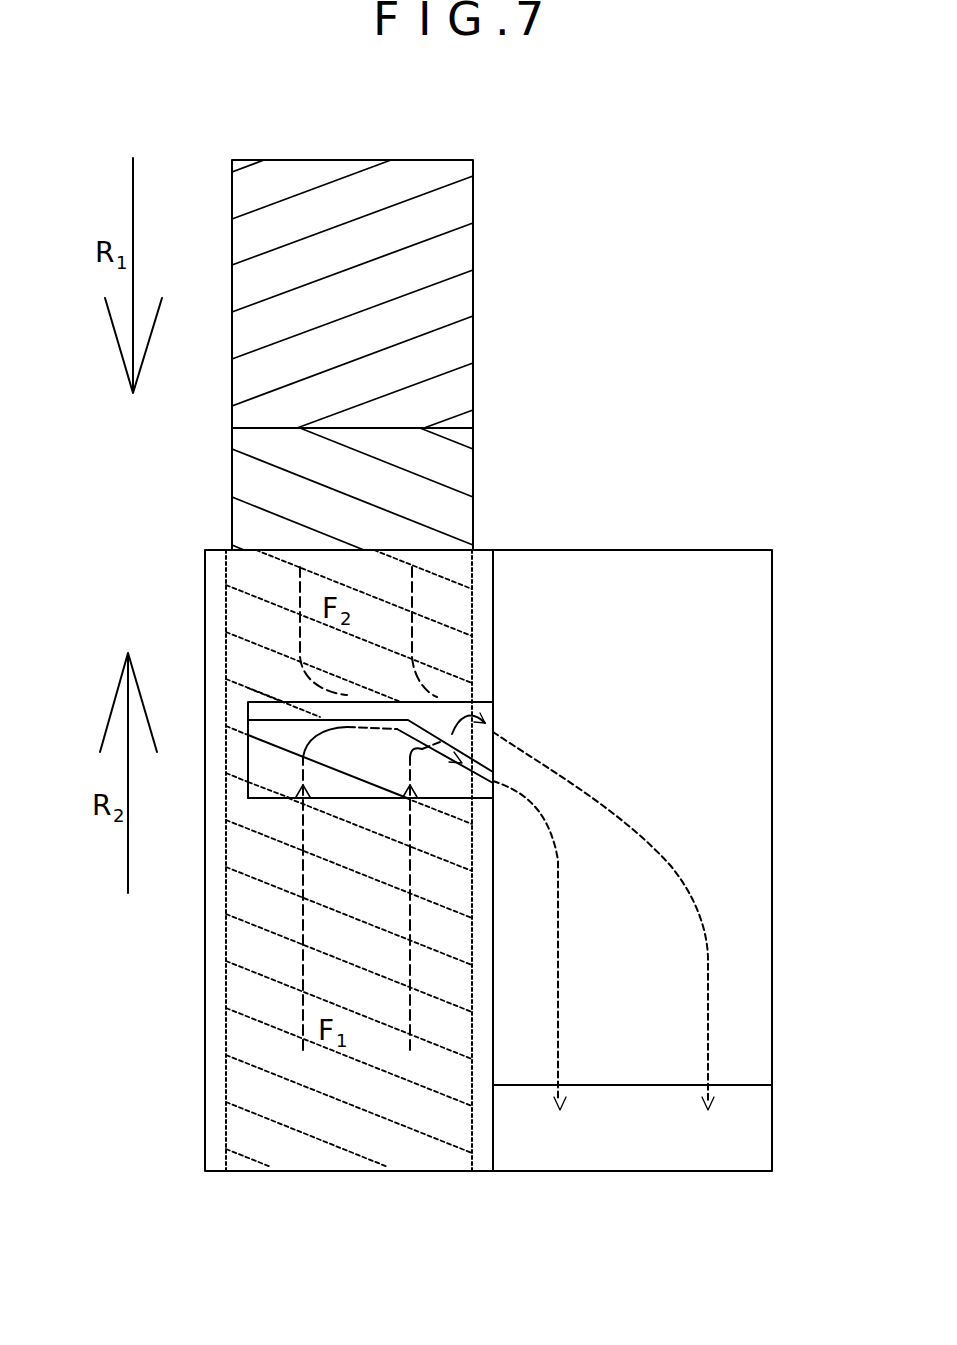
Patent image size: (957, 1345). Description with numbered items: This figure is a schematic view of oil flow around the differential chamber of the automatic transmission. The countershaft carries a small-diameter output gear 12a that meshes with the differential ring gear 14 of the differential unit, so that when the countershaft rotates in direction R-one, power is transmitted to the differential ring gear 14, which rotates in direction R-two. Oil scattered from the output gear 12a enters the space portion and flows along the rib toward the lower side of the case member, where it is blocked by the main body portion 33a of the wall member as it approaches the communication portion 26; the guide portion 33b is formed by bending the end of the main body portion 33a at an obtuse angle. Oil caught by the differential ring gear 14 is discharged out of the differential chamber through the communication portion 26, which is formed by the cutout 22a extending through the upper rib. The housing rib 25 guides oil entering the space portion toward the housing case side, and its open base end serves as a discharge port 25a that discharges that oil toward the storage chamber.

The output gear 12a is at (455, 262).
The differential ring gear 14 is at (455, 518).
The housing rib 25 is at (752, 622).
The discharge port 25a is at (743, 1085).
The communication portion 26 is at (523, 732).
The main body portion 33a is at (265, 708).
The guide portion 33b is at (493, 706).
The cutout 22a is at (290, 798).